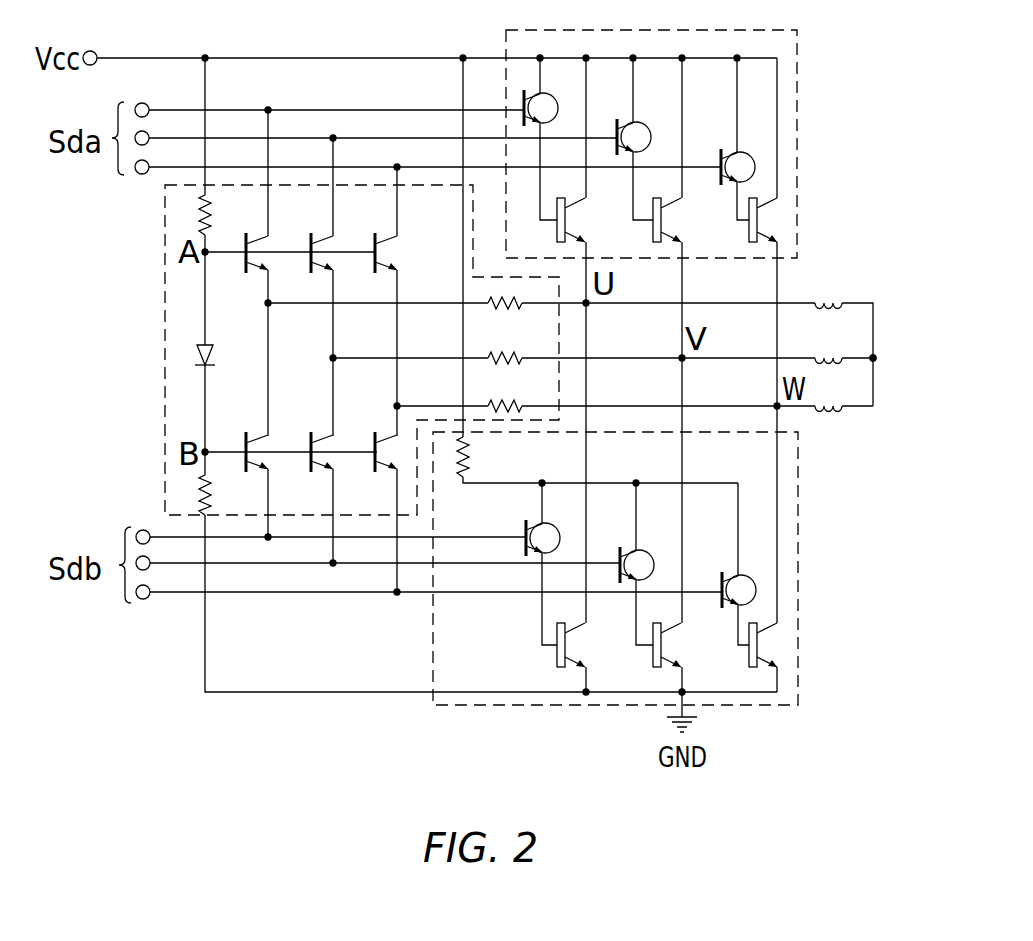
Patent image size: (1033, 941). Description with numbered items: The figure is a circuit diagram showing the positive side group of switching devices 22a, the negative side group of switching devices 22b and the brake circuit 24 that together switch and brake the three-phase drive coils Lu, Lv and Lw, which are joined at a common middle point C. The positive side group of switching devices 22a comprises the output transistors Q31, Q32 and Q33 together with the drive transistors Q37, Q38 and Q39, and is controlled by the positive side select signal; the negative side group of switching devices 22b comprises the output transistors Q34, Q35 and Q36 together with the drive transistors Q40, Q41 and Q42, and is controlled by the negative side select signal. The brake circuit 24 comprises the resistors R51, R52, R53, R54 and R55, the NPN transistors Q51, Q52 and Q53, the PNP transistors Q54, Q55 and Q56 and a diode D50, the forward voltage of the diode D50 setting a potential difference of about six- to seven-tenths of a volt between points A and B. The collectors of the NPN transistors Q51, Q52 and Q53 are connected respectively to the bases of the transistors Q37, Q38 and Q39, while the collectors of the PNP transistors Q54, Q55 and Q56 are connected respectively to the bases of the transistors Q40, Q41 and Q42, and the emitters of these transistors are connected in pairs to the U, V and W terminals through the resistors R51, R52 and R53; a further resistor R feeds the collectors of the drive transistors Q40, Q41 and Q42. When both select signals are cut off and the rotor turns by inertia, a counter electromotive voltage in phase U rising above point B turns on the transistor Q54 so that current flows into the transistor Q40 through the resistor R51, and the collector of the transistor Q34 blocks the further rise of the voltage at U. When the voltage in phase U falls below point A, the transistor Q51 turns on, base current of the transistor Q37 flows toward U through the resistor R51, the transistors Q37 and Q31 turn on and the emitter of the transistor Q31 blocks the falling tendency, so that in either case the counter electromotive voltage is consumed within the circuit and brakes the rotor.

The positive side group of switching devices 22a is at (797, 122).
The negative side group of switching devices 22b is at (798, 580).
The brake circuit 24 is at (362, 408).
The transistor Q31 is at (546, 180).
The transistor Q32 is at (639, 208).
The transistor Q33 is at (732, 232).
The transistor Q34 is at (539, 497).
The transistor Q35 is at (637, 525).
The transistor Q36 is at (733, 549).
The transistor Q37 is at (552, 139).
The transistor Q38 is at (648, 139).
The transistor Q39 is at (750, 139).
The transistor Q40 is at (555, 564).
The transistor Q41 is at (650, 564).
The transistor Q42 is at (753, 564).
The NPN transistor Q51 is at (241, 230).
The NPN transistor Q52 is at (303, 230).
The NPN transistor Q53 is at (367, 230).
The PNP transistor Q54 is at (243, 473).
The PNP transistor Q55 is at (303, 473).
The PNP transistor Q56 is at (367, 473).
The resistor R is at (475, 457).
The resistor R51 is at (516, 283).
The resistor R52 is at (516, 339).
The resistor R53 is at (516, 387).
The resistor R54 is at (198, 223).
The resistor R55 is at (158, 495).
The diode D50 is at (231, 349).
The drive coil Lu is at (827, 283).
The drive coil Lv is at (827, 338).
The drive coil Lw is at (833, 387).
The middle point C is at (885, 362).